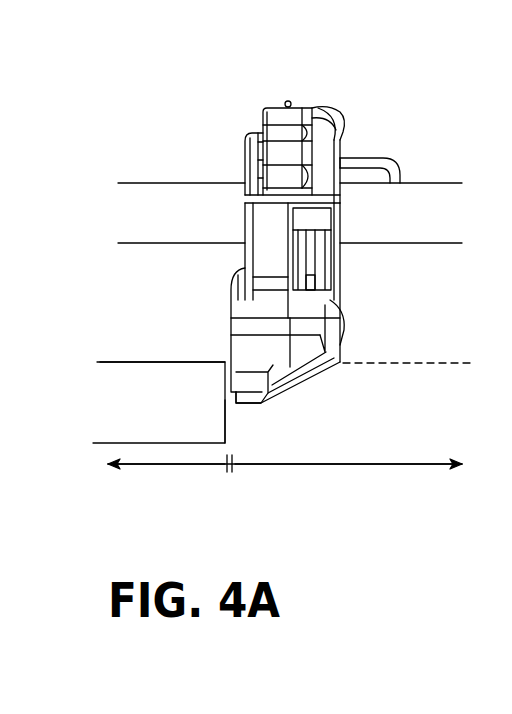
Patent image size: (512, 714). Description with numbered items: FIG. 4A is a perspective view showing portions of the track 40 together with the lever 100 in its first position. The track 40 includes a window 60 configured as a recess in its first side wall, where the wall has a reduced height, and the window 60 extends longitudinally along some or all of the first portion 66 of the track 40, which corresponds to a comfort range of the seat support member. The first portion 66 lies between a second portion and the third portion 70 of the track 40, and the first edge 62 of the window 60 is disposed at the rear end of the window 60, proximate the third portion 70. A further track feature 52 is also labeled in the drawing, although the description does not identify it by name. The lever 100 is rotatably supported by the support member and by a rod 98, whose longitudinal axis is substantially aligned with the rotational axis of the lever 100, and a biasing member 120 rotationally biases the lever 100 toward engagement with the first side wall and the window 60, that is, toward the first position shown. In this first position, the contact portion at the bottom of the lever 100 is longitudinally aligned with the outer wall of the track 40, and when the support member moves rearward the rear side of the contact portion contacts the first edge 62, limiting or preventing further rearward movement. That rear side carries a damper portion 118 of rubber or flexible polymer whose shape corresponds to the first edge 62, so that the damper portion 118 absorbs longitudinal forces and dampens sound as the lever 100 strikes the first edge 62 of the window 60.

The lever 100 is at (239, 140).
The biasing member 120 is at (367, 158).
The rod 98 is at (418, 207).
The track 40 is at (96, 351).
The surface 52 is at (170, 362).
The damper portion 118 is at (248, 410).
The third portion 70 is at (190, 464).
The first edge 62 is at (227, 418).
The first portion 66 is at (295, 464).
The window 60 is at (304, 444).